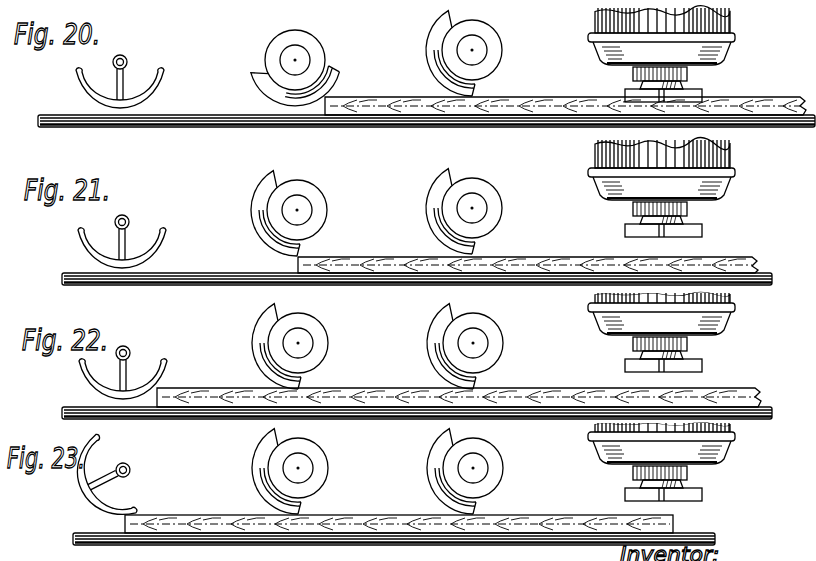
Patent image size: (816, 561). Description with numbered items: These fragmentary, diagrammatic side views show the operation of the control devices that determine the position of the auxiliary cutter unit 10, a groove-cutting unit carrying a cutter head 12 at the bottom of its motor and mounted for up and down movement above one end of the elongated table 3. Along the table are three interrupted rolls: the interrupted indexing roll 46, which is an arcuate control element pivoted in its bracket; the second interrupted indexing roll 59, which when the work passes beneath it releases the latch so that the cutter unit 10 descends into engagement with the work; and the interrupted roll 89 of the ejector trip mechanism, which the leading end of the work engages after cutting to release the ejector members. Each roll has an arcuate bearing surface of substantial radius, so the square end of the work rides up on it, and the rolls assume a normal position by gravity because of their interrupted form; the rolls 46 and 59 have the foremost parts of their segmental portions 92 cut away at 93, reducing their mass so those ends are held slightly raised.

In FIG. 20, the elongated table 3 is at (372, 128).
In FIG. 21, the elongated table 3 is at (371, 288).
In FIG. 22, the elongated table 3 is at (383, 421).
In FIG. 23, the elongated table 3 is at (388, 535).
In FIG. 20, the auxiliary cutter unit 10 is at (731, 22).
In FIG. 22, the auxiliary cutter unit 10 is at (733, 320).
In FIG. 20, the cutter head 12 is at (698, 92).
In FIG. 21, the cutter head 12 is at (703, 231).
In FIG. 22, the cutter head 12 is at (703, 365).
In FIG. 23, the cutter head 12 is at (703, 492).
In FIG. 20, the interrupted indexing roll 46 is at (267, 97).
In FIG. 22, the interrupted indexing roll 46 is at (256, 338).
In FIG. 23, the interrupted indexing roll 46 is at (253, 476).
In FIG. 20, the second interrupted indexing roll 59 is at (432, 35).
In FIG. 21, the second interrupted indexing roll 59 is at (432, 199).
In FIG. 22, the second interrupted indexing roll 59 is at (430, 352).
In FIG. 23, the second interrupted indexing roll 59 is at (430, 487).
In FIG. 20, the interrupted roll 89 is at (160, 89).
In FIG. 21, the interrupted roll 89 is at (160, 250).
In FIG. 22, the interrupted roll 89 is at (167, 372).
In FIG. 23, the interrupted roll 89 is at (85, 488).
In FIG. 22, the segmental portions 92 is at (455, 303).
In FIG. 22, the cut-away 93 is at (460, 370).